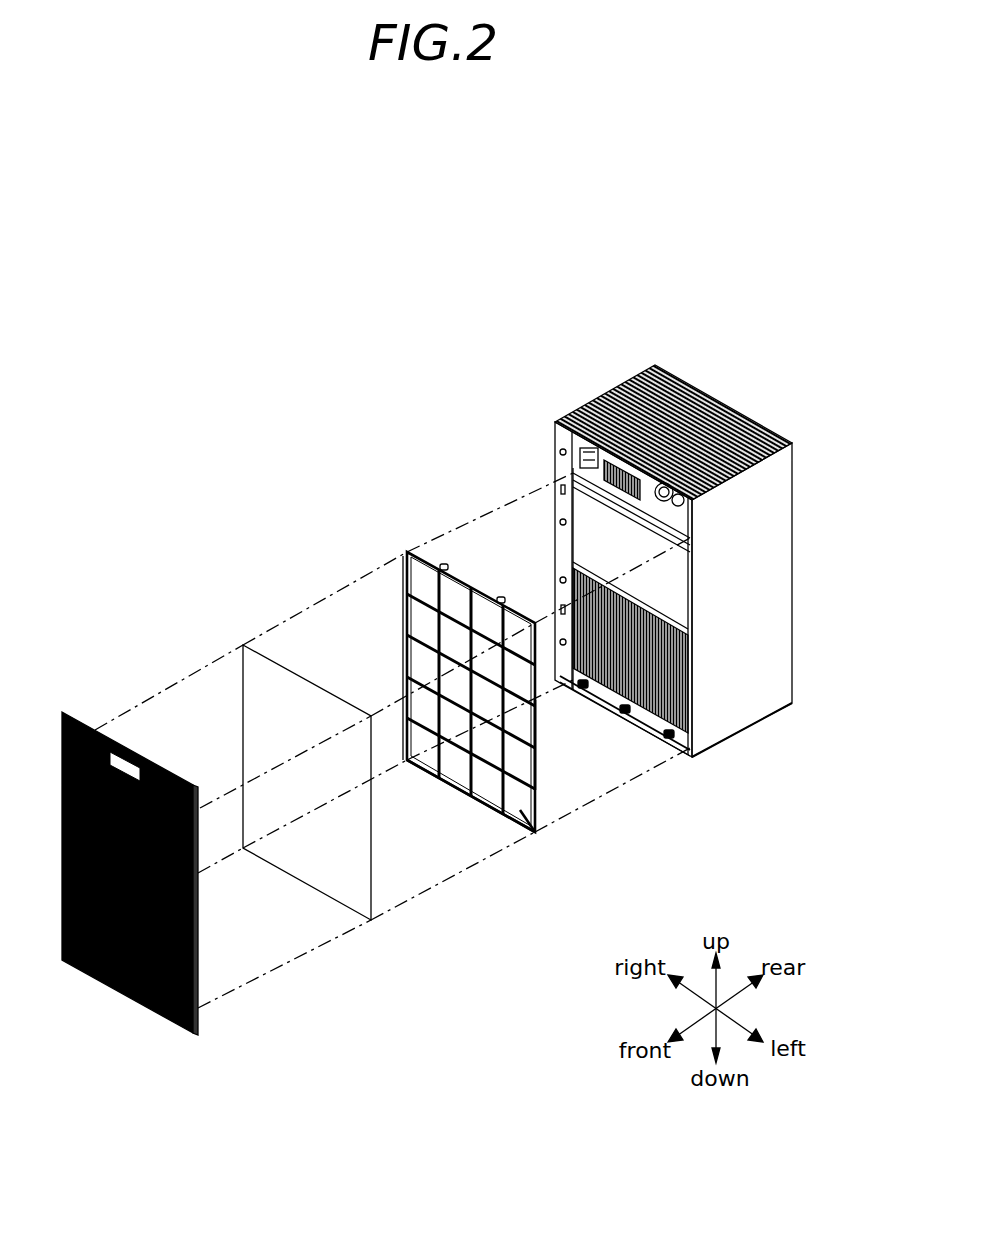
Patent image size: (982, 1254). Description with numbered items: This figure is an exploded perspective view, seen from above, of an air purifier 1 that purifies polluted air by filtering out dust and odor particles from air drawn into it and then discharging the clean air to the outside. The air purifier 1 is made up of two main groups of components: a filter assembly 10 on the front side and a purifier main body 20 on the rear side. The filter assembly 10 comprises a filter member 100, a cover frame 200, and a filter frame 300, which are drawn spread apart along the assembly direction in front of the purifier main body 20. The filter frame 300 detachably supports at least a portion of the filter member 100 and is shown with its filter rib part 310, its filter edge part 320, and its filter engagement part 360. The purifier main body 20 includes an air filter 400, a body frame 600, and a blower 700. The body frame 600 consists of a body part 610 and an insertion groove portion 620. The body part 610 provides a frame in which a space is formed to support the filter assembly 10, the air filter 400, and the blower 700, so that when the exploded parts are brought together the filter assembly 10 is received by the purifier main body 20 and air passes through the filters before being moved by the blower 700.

The air purifier 1 is at (669, 331).
The filter assembly 10 is at (337, 301).
The purifier main body 20 is at (709, 595).
The filter member 100 is at (246, 645).
The cover frame 200 is at (80, 706).
The filter frame 300 is at (497, 676).
The filter rib part 310 is at (521, 830).
The filter edge part 320 is at (537, 778).
The filter engagement part 360 is at (513, 831).
The air filter 400 is at (680, 583).
The body frame 600 is at (678, 750).
The body part 610 is at (693, 785).
The insertion groove portion 620 is at (687, 733).
The blower 700 is at (683, 512).